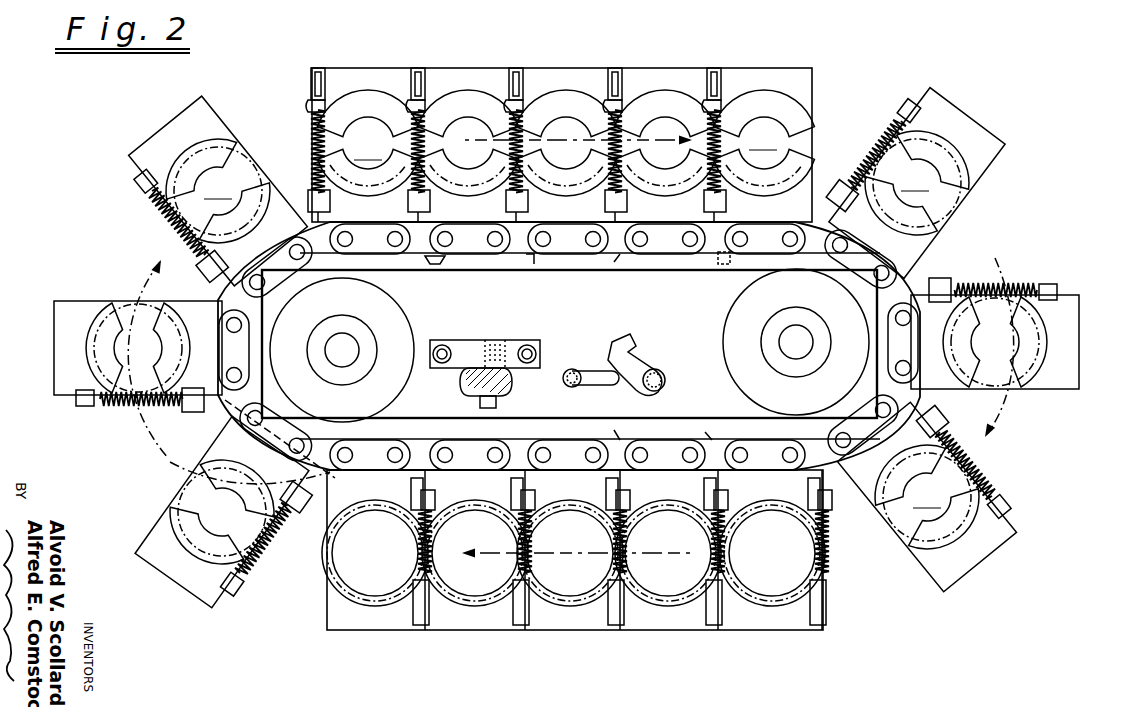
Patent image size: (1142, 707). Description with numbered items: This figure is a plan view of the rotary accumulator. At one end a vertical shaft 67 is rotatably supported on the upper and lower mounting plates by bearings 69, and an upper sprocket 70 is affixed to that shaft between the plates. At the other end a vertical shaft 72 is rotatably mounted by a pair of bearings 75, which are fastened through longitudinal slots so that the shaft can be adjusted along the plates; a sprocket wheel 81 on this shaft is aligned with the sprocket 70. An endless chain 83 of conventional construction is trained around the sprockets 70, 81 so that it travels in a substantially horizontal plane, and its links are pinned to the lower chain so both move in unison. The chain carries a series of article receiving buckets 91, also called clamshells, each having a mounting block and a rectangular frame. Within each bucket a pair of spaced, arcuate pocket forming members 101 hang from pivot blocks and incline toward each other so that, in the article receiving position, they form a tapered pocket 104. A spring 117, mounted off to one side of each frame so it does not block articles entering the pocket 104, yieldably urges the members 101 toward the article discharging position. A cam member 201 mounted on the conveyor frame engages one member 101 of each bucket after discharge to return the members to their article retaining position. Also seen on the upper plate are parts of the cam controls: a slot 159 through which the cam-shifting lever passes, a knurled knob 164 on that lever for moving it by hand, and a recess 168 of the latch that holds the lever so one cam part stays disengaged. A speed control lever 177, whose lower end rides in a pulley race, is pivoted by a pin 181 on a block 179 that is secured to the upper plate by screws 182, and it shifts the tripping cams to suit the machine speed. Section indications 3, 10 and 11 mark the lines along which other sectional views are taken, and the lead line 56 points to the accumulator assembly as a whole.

The section line 3- 3 is at (76, 352).
The section line 10- 10 is at (612, 62).
The section line 11- 11 is at (615, 440).
The work station unit 56 is at (985, 78).
The vertical shaft 67 is at (348, 348).
The bearings 69 is at (352, 375).
The upper sprocket 70 is at (440, 260).
The vertical shaft 72 is at (800, 340).
The bearings 75 is at (794, 368).
The sprocket wheel 81 is at (716, 256).
The endless chain 83 is at (915, 258).
The buckets 91 is at (828, 102).
The pocket forming members 101 is at (468, 120).
The tapered pockets 104 is at (572, 334).
The spring 117 is at (866, 162).
The slot 159 is at (597, 370).
The knurled knob 164 is at (572, 387).
The recess 168 is at (645, 365).
The speed control lever 177 is at (470, 385).
The block 179 is at (468, 352).
The pin 181 is at (498, 404).
The screws 182 is at (528, 348).
The cam member 201 is at (200, 428).